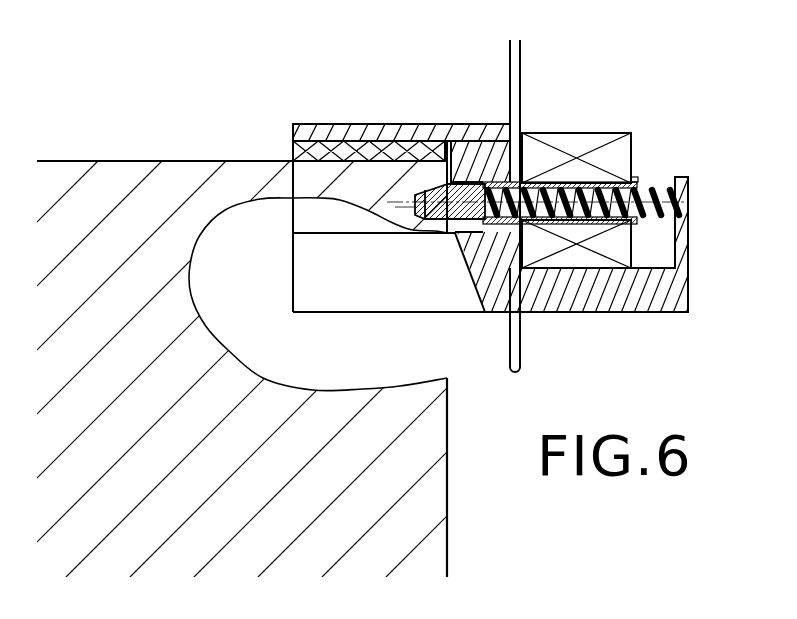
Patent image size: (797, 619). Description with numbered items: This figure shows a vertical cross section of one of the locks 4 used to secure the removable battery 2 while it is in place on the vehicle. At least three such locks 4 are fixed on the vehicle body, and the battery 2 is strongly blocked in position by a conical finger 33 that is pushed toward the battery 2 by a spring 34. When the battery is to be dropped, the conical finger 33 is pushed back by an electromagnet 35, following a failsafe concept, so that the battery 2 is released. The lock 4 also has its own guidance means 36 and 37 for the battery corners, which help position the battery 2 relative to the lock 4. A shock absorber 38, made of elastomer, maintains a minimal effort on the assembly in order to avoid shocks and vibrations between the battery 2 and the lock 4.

The removable battery 2 is at (122, 160).
The lock 4 is at (430, 130).
The conical finger 33 is at (490, 135).
The spring 34 is at (662, 186).
The electromagnet 35 is at (596, 140).
The guidance means 36 is at (320, 252).
The guidance means 37 is at (460, 264).
The shock absorber 38 is at (344, 140).